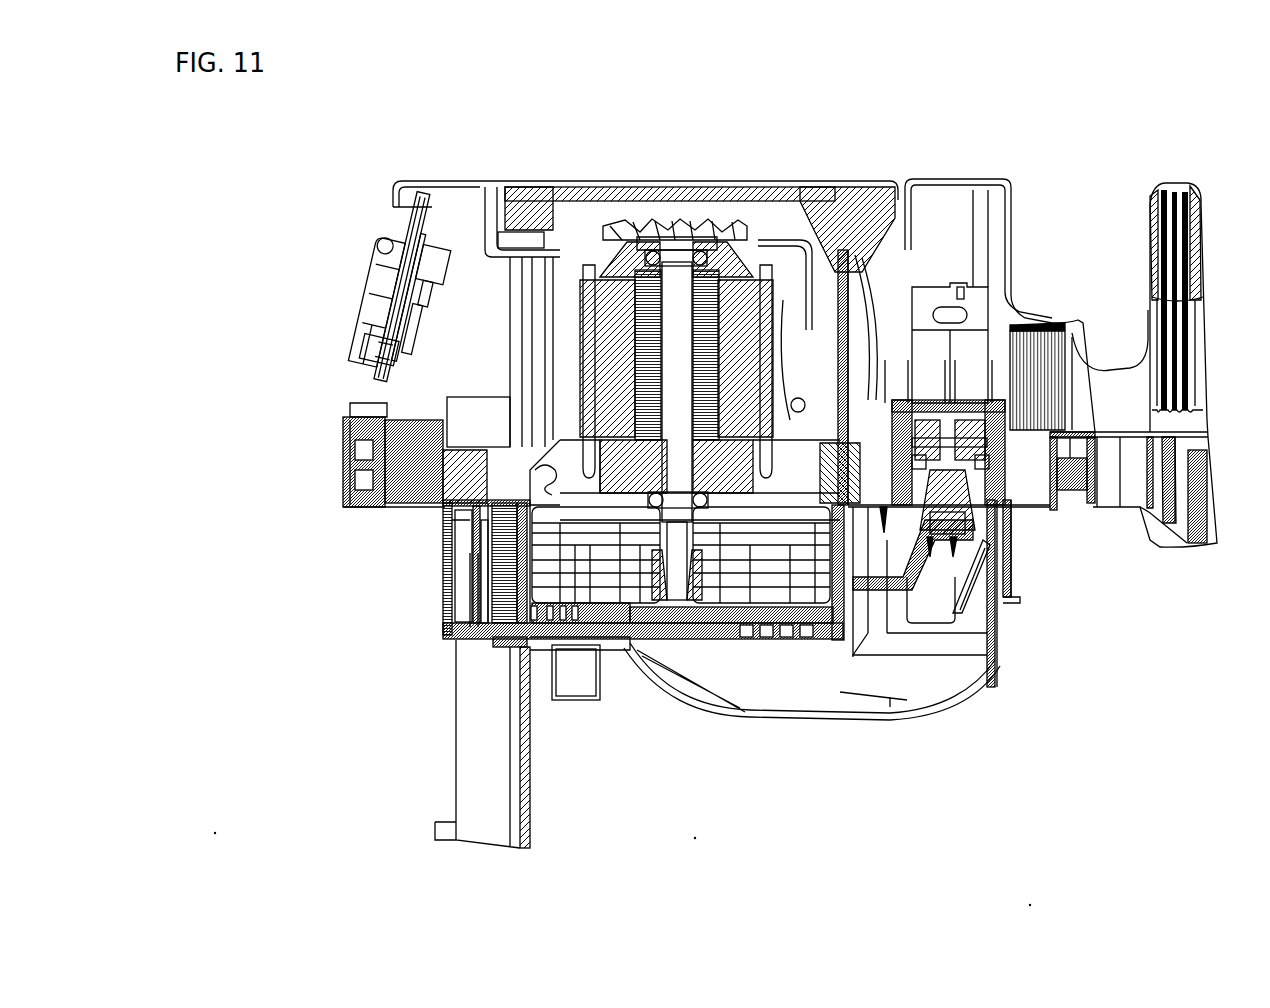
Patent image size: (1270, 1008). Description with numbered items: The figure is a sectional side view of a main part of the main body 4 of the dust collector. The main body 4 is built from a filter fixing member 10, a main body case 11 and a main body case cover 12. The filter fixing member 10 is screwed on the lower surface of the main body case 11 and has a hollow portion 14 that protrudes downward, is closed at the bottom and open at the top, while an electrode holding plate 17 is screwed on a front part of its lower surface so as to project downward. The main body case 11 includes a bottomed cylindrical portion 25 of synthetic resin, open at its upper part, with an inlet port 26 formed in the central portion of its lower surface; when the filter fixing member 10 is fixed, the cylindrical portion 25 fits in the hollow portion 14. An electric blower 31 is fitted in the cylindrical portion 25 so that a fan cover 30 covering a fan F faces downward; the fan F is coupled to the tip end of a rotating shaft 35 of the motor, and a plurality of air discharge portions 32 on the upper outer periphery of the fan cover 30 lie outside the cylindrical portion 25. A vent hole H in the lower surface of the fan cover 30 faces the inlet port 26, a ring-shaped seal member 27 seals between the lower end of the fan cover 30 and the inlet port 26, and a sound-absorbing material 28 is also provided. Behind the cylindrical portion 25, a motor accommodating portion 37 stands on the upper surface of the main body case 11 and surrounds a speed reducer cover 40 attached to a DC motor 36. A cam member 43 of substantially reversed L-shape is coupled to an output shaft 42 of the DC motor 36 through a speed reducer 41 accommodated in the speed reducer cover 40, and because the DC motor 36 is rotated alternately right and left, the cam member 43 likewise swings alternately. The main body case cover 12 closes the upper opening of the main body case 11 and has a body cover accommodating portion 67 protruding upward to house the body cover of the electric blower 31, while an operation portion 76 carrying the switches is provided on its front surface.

The main body 4 is at (1123, 140).
The filter fixing member 10 is at (445, 598).
The main body case 11 is at (333, 477).
The main body case cover 12 is at (335, 421).
The hollow portion 14 is at (900, 713).
The electrode holding plate 17 is at (456, 752).
The cylindrical portion 25 is at (757, 625).
The inlet port 26 is at (675, 585).
The ring-shaped seal member 27 is at (495, 640).
The sound-absorbing material 28 is at (443, 510).
The fan cover 30 is at (520, 577).
The electric blower 31 is at (808, 300).
The air discharge portions 32 is at (585, 590).
The rotating shaft 35 is at (705, 600).
The DC motor 36 is at (975, 305).
The motor accommodating portion 37 is at (873, 395).
The speed reducer cover 40 is at (1025, 320).
The speed reducer 41 is at (1000, 462).
The output shaft 42 is at (985, 400).
The cam member 43 is at (878, 507).
The body cover accommodating portion 67 is at (768, 300).
The operation portion 76 is at (417, 218).
The fan F is at (613, 592).
The vent hole H is at (660, 603).